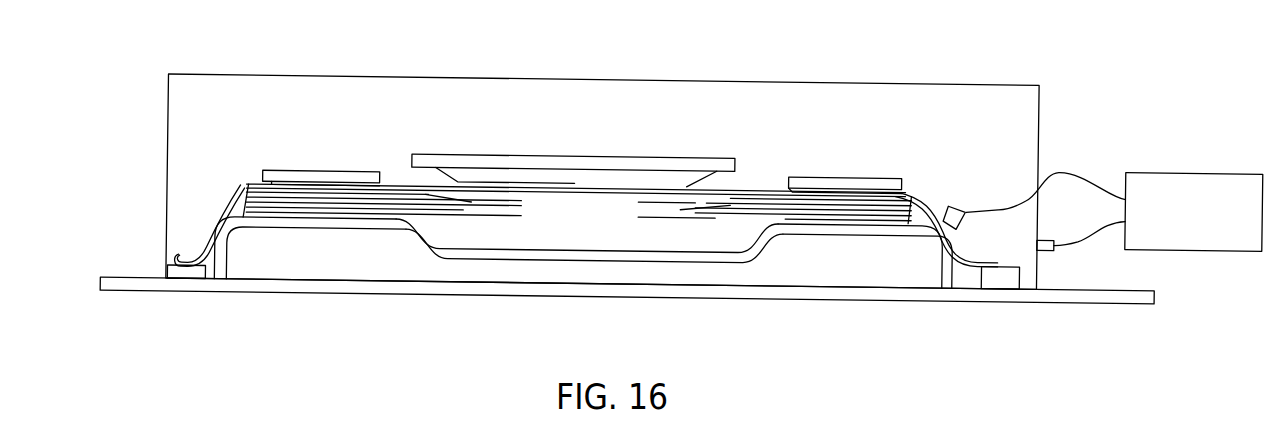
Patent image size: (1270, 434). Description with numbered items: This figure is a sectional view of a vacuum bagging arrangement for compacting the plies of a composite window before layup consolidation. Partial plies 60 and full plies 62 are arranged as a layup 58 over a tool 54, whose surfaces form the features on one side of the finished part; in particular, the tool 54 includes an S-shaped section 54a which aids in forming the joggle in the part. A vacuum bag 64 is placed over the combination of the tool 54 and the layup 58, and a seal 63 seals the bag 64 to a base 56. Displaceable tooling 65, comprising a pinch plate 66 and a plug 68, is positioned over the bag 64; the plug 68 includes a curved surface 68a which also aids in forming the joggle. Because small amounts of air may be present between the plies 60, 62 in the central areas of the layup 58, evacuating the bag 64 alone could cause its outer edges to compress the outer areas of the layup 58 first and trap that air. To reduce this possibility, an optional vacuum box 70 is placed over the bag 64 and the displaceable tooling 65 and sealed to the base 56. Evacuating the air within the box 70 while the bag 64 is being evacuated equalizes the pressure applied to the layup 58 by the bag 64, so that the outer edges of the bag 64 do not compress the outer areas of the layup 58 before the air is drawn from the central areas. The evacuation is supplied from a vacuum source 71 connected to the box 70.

The tool 54 is at (322, 226).
The S-shaped section 54a is at (447, 233).
The base 56 is at (181, 291).
The layup 58 is at (235, 183).
The partial plies 60 is at (900, 197).
The full plies 62 is at (682, 200).
The seal 63 is at (170, 270).
The vacuum bag 64 is at (205, 233).
The displaceable tooling 65 is at (252, 139).
The pinch plate 66 is at (298, 169).
The plug 68 is at (507, 169).
The curved surface 68a is at (424, 181).
The vacuum box 70 is at (1009, 99).
The vacuum source 71 is at (1193, 238).